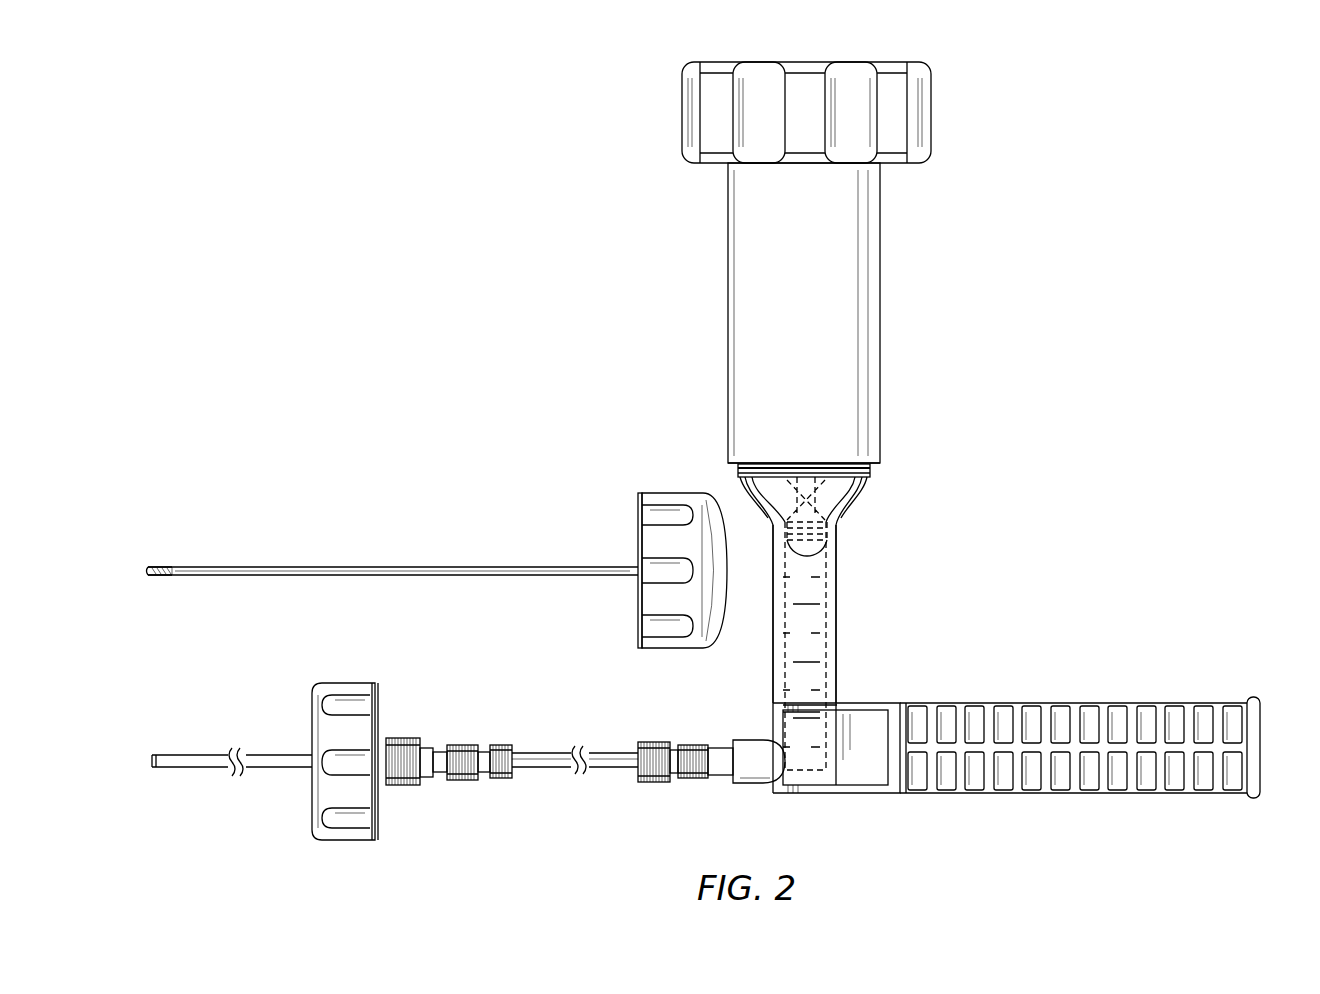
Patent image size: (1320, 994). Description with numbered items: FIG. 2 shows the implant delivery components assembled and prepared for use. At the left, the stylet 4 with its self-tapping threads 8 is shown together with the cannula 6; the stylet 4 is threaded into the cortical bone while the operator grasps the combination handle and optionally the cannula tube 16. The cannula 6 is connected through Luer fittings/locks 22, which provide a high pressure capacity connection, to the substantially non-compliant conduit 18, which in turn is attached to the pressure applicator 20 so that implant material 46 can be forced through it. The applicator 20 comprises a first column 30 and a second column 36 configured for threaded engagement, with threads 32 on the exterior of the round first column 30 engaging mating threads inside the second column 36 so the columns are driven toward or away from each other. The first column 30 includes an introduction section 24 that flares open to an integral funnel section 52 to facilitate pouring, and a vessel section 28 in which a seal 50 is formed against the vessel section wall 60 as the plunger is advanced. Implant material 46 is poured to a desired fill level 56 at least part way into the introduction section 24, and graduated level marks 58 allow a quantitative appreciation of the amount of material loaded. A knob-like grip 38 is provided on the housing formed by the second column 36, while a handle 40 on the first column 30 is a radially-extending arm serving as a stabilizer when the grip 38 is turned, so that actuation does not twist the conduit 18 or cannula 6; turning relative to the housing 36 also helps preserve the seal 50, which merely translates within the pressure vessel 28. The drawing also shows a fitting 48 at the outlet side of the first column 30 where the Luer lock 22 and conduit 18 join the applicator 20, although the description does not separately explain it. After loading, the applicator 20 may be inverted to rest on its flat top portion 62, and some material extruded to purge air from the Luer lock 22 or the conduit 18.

The stylet 4 is at (492, 545).
The cannula 6 is at (272, 712).
The self-tapping threads 8 is at (160, 567).
The cannula tube 16 is at (208, 767).
The non-compliant conduit 18 is at (605, 770).
The pressure applicator 20 is at (905, 447).
The Luer fittings/locks 22 is at (747, 740).
The introduction section 24 is at (837, 510).
The vessel section 28 is at (837, 608).
The first column 30 is at (862, 668).
The threads 32 is at (875, 472).
The second column 36 is at (905, 248).
The knob-like grip 38 is at (932, 93).
The handle 40 is at (995, 793).
The implant material 46 is at (817, 563).
The side port fitting 48 is at (745, 785).
The seal 50 is at (818, 537).
The funnel section 52 is at (870, 481).
The desired fill level 56 is at (745, 483).
The graduated level marks 58 is at (790, 747).
The vessel section wall 60 is at (827, 587).
The flat top portion 62 is at (820, 795).